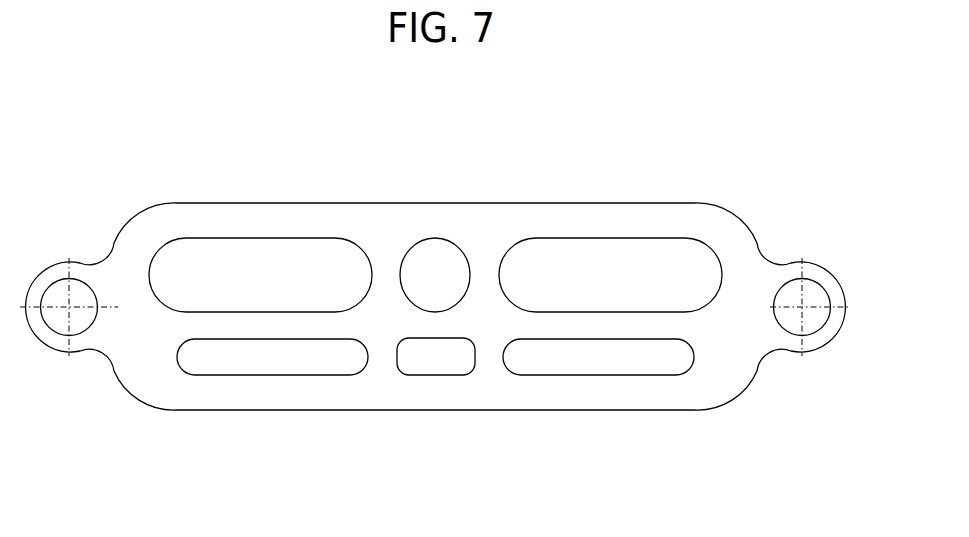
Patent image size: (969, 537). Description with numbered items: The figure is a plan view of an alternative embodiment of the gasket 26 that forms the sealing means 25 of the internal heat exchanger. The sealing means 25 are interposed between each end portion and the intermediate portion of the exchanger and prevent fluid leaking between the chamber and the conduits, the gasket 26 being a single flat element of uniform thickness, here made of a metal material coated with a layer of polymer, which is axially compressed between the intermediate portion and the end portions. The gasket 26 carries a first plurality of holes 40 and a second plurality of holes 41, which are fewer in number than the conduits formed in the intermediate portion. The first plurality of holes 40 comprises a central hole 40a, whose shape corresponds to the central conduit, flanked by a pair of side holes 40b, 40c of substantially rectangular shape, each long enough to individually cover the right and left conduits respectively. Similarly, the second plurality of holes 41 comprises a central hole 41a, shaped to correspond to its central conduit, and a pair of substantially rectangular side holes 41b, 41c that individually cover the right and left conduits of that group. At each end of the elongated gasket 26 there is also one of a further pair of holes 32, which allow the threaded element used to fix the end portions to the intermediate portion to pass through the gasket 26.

The sealing means 25 is at (436, 219).
The gasket 26 is at (733, 207).
The further pair of holes 32 is at (54, 322).
The first plurality of holes 40 is at (435, 214).
The central hole 40a is at (440, 258).
The side hole 40b is at (675, 250).
The left upper slot 40c is at (223, 248).
The second plurality of holes 41 is at (435, 420).
The central hole 41a is at (455, 362).
The side hole 41b is at (644, 358).
The left lower slot 41c is at (226, 358).